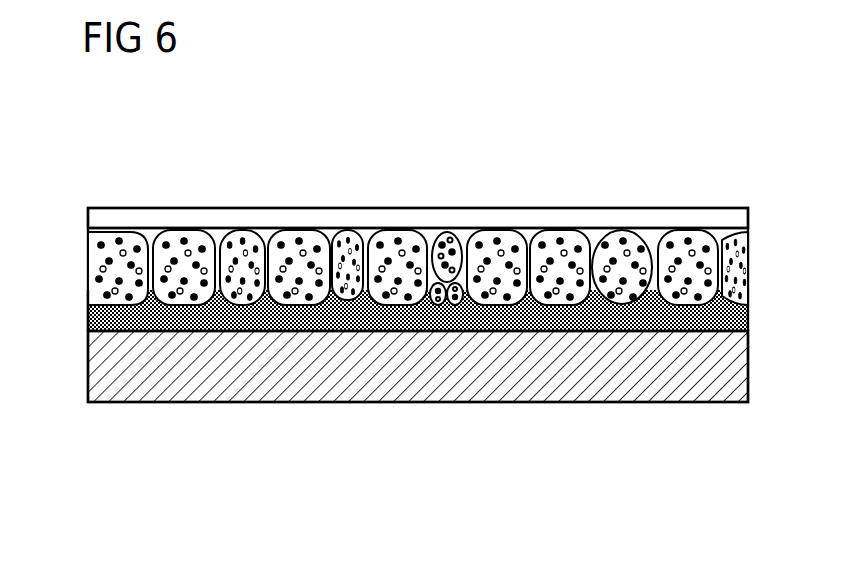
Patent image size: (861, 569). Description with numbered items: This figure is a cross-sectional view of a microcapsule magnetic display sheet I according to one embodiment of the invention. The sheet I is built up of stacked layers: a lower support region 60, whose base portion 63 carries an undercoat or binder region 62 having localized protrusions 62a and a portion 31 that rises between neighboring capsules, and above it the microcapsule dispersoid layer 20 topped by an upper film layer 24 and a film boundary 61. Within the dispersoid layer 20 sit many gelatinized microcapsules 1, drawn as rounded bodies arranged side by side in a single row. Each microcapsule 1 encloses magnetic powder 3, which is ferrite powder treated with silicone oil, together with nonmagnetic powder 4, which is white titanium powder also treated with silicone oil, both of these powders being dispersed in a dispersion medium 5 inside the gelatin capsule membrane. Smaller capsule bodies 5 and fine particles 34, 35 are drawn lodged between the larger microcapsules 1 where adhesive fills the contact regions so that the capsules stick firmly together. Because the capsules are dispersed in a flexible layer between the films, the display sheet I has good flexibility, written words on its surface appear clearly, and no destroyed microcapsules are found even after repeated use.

The microcapsule magnetic display sheet I is at (706, 202).
The microcapsules 1 is at (176, 232).
The magnetic powder 3 is at (98, 265).
The nonmagnetic powder 4 is at (88, 255).
The dispersion medium 5 is at (218, 232).
The microcapsule dispersoid layer 20 is at (750, 268).
The top layer 24 is at (343, 208).
The adhesive layer portion 31 is at (192, 298).
The fine particle 34 is at (453, 232).
The fine particles 35 is at (657, 232).
The support 60 is at (748, 352).
The phosphor layer 61 is at (270, 232).
The undercoat layer 62 is at (750, 325).
The undercoat layer protrusion 62a is at (253, 292).
The support base 63 is at (563, 386).